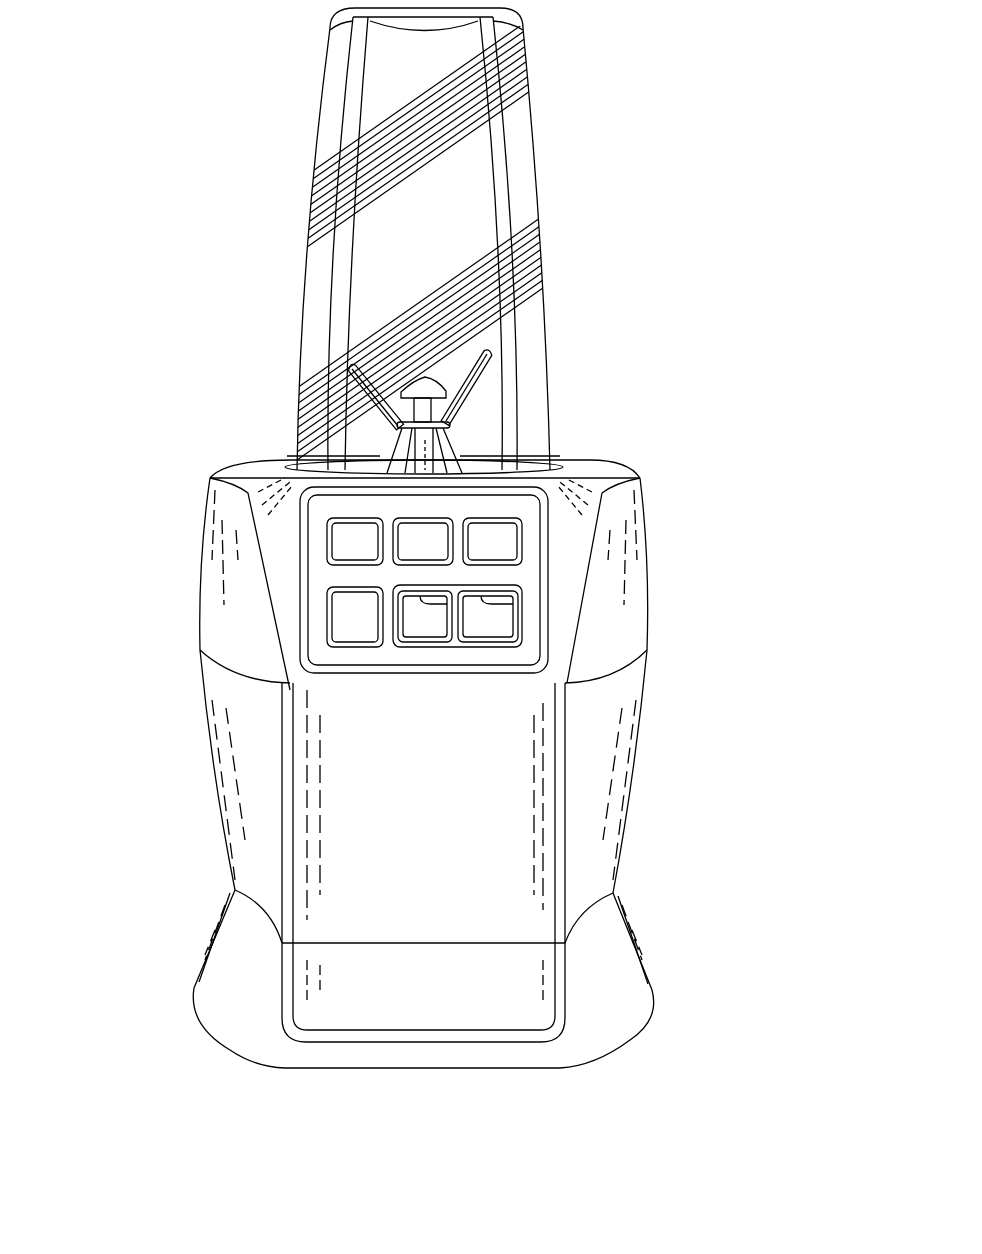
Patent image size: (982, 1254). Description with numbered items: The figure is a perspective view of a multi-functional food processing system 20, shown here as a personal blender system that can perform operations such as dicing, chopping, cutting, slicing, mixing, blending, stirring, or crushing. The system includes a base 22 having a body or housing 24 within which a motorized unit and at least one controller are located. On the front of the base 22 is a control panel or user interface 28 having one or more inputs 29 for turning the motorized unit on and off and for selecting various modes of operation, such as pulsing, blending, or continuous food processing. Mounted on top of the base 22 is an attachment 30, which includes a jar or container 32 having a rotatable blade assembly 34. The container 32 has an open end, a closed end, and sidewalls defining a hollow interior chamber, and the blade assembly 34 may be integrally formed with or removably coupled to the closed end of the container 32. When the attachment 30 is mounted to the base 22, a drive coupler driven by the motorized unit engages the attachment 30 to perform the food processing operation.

The food processing system 20 is at (142, 187).
The base 22 is at (697, 758).
The housing 24 is at (223, 747).
The control panel 28 is at (527, 570).
The inputs 29 is at (341, 543).
The attachment 30 is at (608, 303).
The container 32 is at (537, 130).
The rotatable blade assembly 34 is at (378, 352).